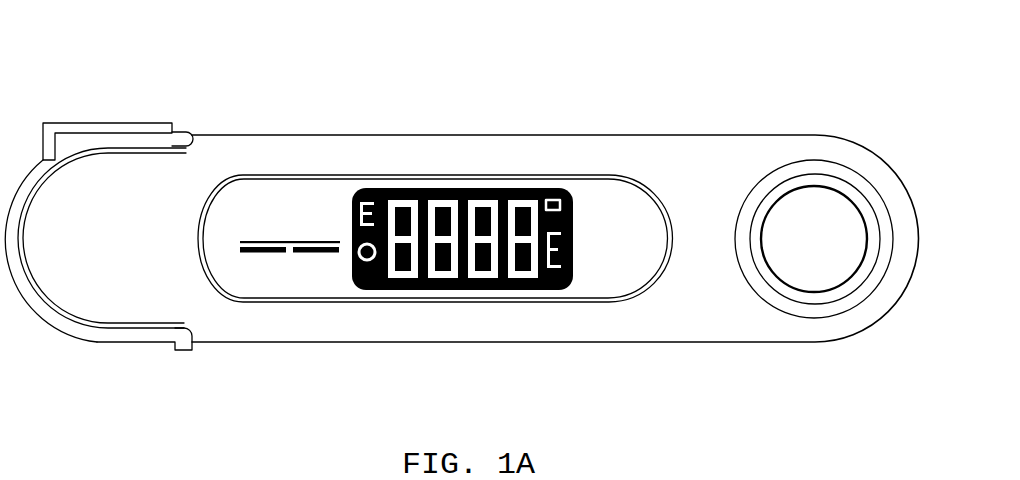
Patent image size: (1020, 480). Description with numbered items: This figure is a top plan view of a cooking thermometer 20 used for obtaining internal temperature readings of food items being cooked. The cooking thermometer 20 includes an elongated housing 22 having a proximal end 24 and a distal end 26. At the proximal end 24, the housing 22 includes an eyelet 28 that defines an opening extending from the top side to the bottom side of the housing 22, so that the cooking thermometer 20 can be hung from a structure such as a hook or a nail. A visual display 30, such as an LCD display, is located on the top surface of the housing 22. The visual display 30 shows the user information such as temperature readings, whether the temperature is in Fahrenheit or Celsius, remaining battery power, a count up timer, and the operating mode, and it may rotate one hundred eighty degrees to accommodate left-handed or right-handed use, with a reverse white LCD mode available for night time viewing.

The cooking thermometer 20 is at (673, 113).
The housing 22 is at (281, 152).
The proximal end 24 is at (879, 348).
The distal end 26 is at (33, 345).
The eyelet 28 is at (814, 239).
The visual display 30 is at (465, 163).